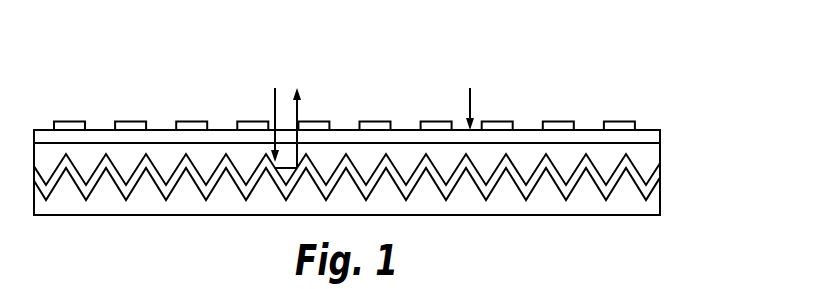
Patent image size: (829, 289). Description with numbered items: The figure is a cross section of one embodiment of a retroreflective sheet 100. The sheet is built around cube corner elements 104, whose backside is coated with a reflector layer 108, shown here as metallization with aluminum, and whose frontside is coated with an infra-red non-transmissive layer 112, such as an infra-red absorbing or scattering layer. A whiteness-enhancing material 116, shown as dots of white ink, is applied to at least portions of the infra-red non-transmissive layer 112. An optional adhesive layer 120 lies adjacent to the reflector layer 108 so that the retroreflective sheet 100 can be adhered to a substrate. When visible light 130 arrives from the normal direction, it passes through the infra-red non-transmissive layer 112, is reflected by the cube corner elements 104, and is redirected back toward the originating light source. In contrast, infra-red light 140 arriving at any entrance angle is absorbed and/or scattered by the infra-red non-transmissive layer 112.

The retroreflective sheet 100 is at (128, 80).
The cube corner elements 104 is at (652, 155).
The reflector layer 108 is at (655, 177).
The infra-red non-transmissive layer 112 is at (655, 136).
The whiteness-enhancing material 116 is at (620, 121).
The adhesive layer 120 is at (652, 205).
The visible light 130 is at (273, 103).
The infra-red light 140 is at (490, 86).